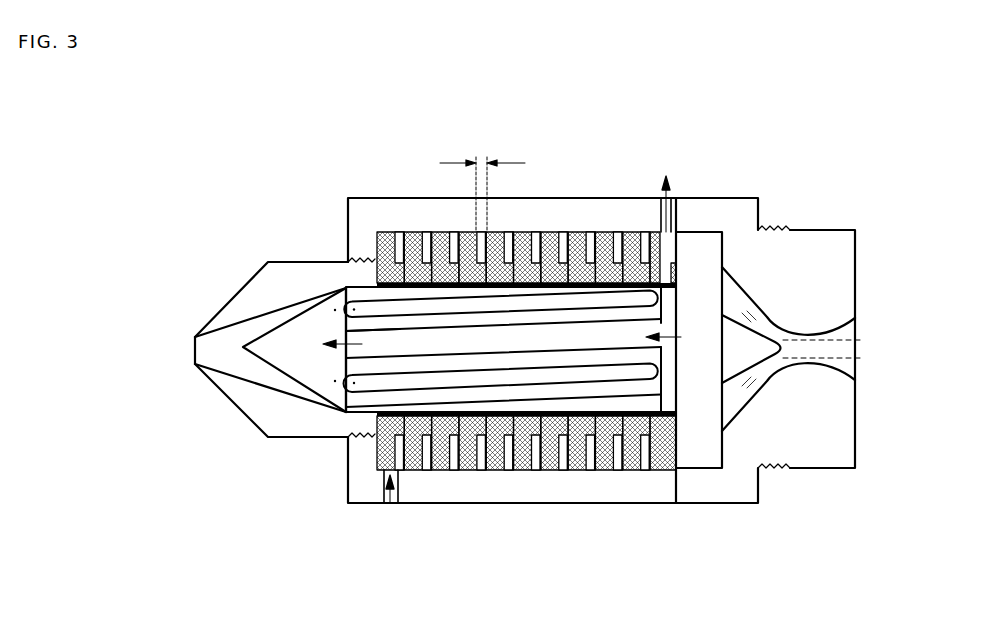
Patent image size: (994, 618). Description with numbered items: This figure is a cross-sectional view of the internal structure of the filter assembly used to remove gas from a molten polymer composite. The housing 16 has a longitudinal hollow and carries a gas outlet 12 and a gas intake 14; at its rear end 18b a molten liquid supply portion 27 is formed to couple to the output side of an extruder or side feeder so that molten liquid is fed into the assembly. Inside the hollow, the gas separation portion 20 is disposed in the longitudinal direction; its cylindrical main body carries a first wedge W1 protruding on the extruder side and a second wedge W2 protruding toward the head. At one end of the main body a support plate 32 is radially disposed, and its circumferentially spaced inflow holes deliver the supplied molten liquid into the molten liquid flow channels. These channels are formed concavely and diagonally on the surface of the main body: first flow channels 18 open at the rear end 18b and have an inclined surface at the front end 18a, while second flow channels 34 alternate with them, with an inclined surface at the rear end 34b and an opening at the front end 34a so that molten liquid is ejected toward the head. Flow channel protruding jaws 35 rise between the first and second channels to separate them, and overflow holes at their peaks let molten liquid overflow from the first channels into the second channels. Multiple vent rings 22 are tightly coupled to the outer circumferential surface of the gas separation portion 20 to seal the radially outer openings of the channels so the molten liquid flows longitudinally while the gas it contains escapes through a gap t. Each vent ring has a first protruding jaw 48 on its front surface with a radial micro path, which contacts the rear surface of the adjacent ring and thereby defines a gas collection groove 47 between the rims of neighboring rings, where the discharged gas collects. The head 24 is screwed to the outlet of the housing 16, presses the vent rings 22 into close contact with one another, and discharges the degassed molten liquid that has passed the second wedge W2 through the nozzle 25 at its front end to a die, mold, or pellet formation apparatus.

The gas outlet 12 is at (673, 232).
The gas intake 14 is at (390, 505).
The housing 16 is at (473, 516).
The first flow channel 18 is at (420, 312).
The front end of the first flow channel 18a is at (338, 287).
The rear end 18b is at (662, 337).
The gas separation portion 20 is at (641, 434).
The vent ring 22 is at (526, 185).
The head 24 is at (253, 276).
The nozzle 25 is at (195, 350).
The molten liquid supply portion 27 is at (845, 368).
The support plate 32 is at (706, 235).
The second flow channel 34 is at (565, 368).
The front end of the second flow channel 34a is at (353, 350).
The rear end of the second flow channel 34b is at (660, 375).
The flow channel protruding jaw 35 is at (407, 330).
The gas collection groove 47 is at (577, 232).
The first protruding jaw 48 is at (613, 232).
The first wedge W1 is at (747, 357).
The second wedge W2 is at (283, 362).
The gap t is at (482, 186).